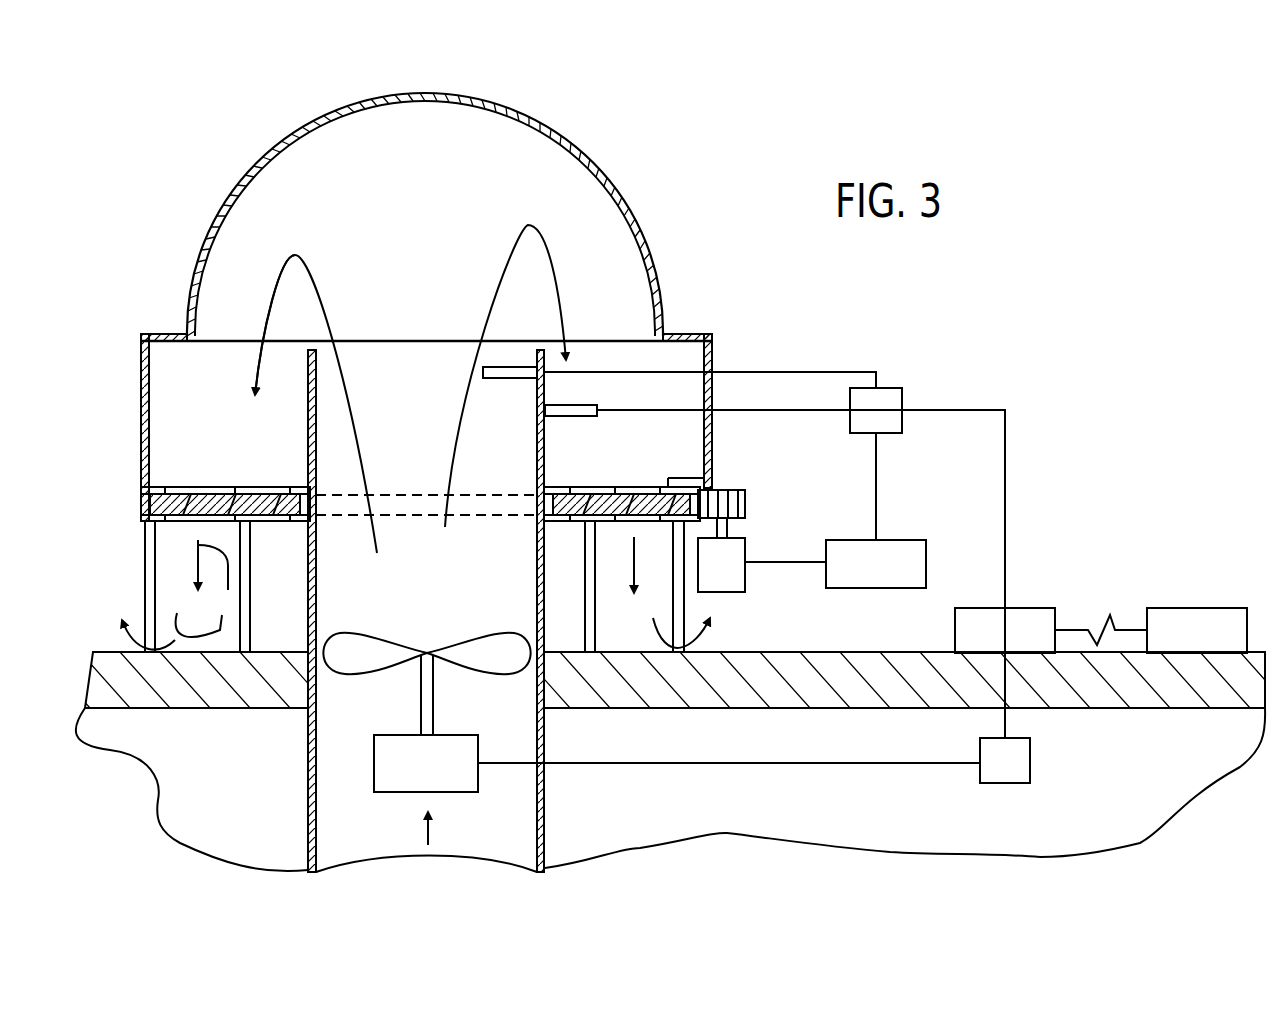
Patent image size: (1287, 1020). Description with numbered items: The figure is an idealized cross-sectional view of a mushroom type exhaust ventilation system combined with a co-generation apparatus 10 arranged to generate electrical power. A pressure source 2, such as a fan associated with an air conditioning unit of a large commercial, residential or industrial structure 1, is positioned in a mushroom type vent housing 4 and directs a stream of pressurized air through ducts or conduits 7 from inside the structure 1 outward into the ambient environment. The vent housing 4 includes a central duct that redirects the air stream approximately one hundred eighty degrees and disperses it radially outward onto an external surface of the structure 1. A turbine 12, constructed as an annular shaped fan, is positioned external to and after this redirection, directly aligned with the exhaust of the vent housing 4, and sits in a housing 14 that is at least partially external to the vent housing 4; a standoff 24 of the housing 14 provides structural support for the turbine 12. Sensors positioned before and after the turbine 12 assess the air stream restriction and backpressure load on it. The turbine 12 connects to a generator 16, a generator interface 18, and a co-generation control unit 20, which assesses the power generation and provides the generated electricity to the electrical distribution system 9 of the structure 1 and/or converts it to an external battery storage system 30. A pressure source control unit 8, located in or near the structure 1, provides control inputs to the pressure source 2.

The co-generation apparatus 10 is at (100, 167).
The mushroom type vent housing 4 is at (262, 162).
The housing 14 is at (141, 437).
The co-generation control unit 20 is at (900, 392).
The turbine 12 is at (637, 490).
The generator interface 18 is at (898, 540).
The generator 16 is at (747, 556).
The standoff 24 is at (145, 588).
The electrical distribution system 9 is at (1035, 608).
The external battery storage system 30 is at (1222, 608).
The ducts and/or conduits 7 is at (308, 772).
The pressure source 2 is at (437, 777).
The structure 1 is at (657, 820).
The pressure source control unit 8 is at (1030, 760).